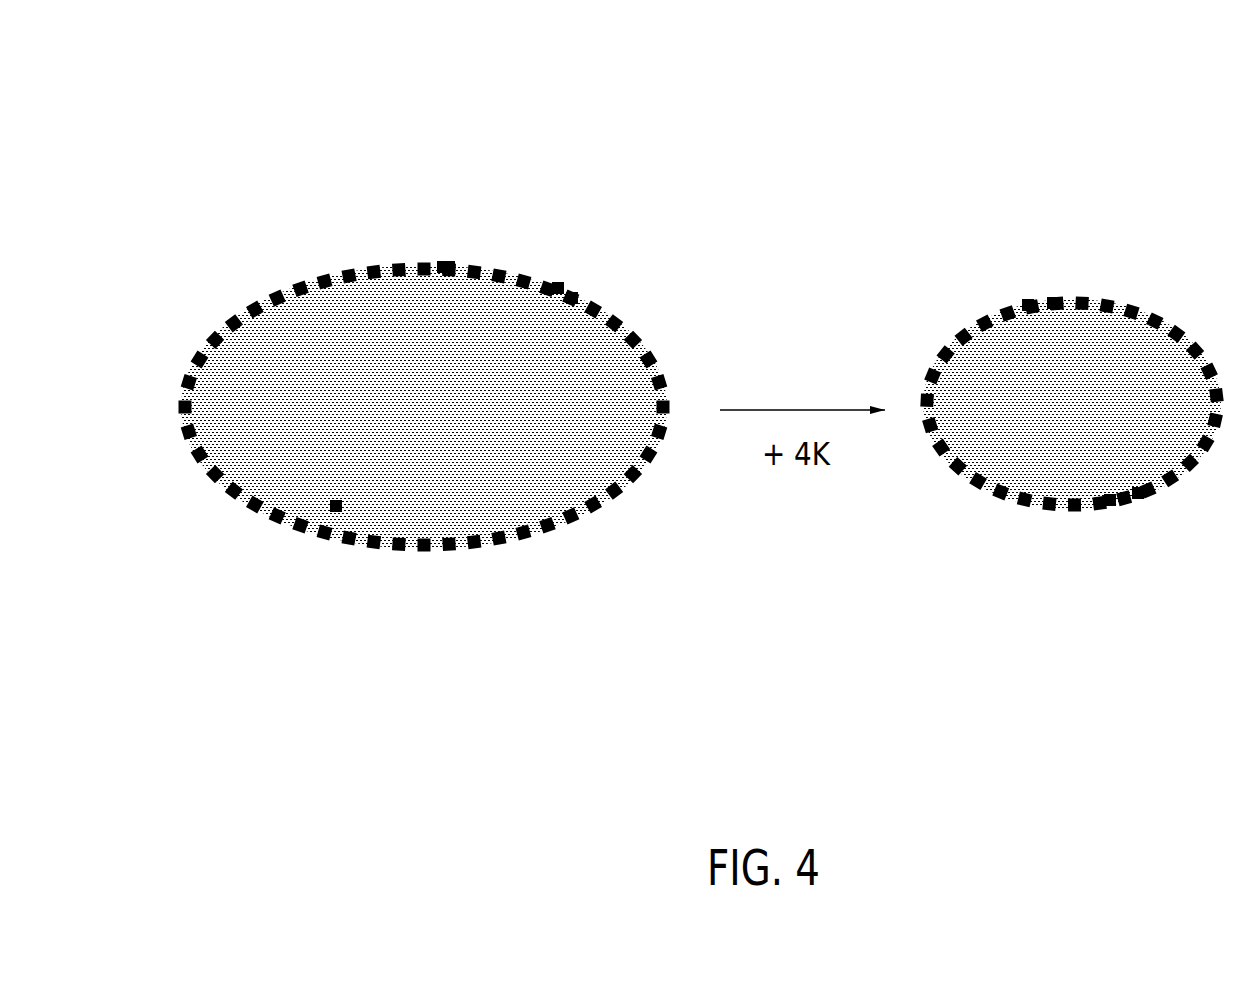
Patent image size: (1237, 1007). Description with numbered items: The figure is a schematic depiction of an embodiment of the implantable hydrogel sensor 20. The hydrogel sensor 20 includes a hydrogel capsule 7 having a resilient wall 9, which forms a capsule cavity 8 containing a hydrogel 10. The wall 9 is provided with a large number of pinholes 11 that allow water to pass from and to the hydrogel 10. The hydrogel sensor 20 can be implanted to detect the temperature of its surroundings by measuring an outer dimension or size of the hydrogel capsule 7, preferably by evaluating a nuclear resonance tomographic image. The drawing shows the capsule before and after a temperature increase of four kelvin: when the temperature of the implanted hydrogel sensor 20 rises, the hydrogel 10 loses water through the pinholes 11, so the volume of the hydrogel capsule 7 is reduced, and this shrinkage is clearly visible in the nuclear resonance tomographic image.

The hydrogel sensor 20 is at (315, 197).
The hydrogel capsule 7 is at (447, 267).
The resilient wall 9 is at (1053, 303).
The capsule cavity 8 is at (335, 505).
The hydrogel 10 is at (465, 460).
The pinholes 11 is at (582, 300).